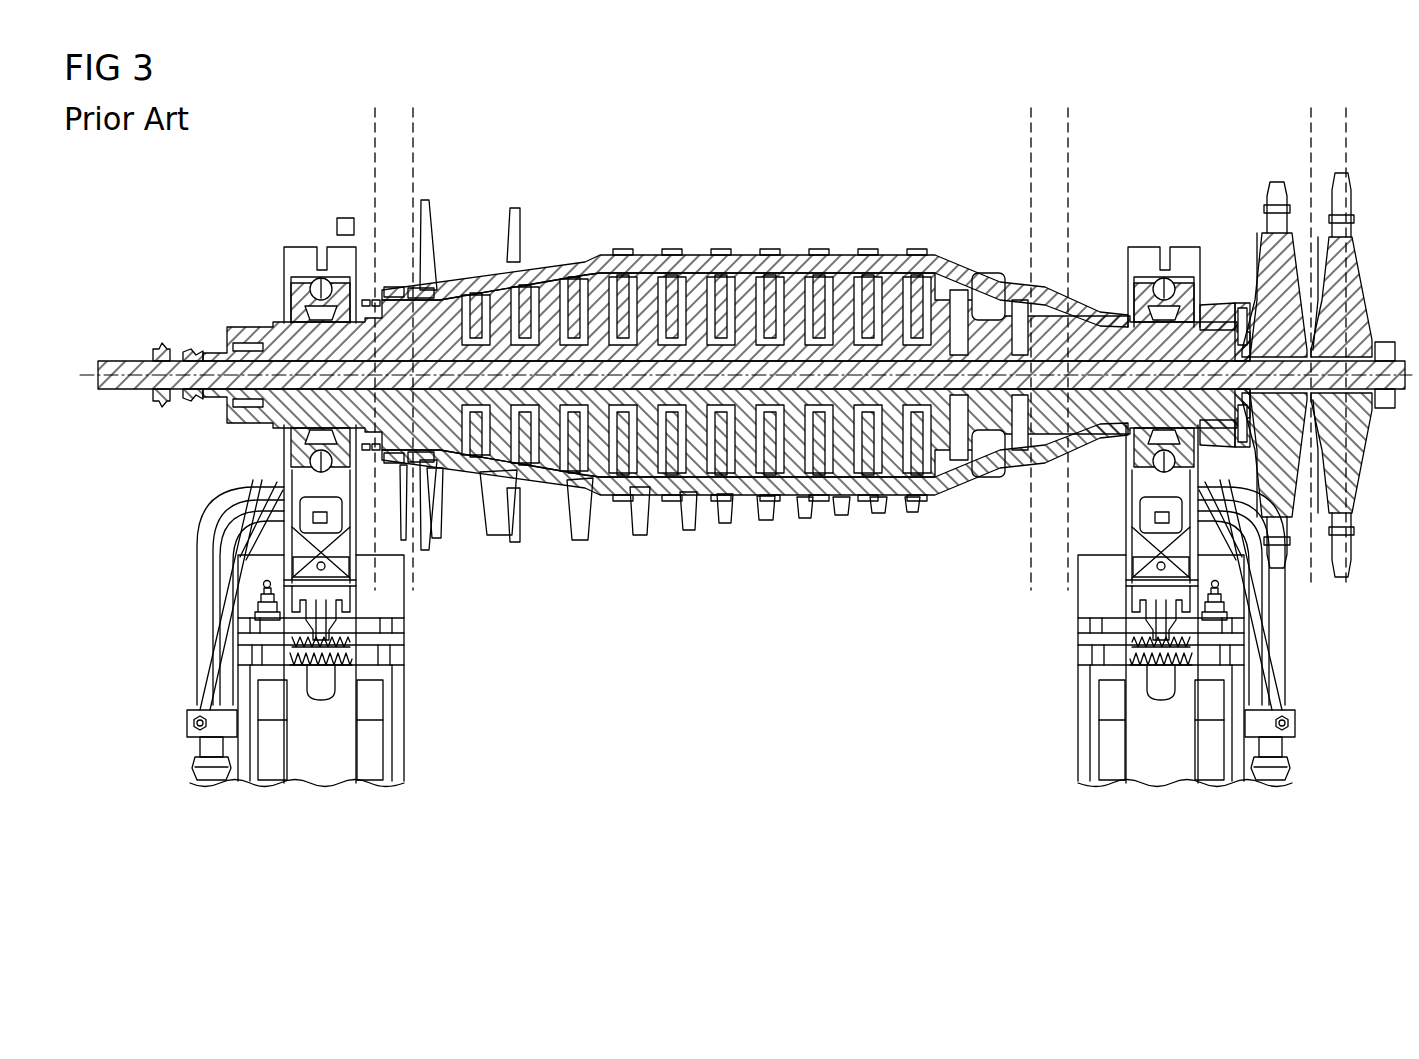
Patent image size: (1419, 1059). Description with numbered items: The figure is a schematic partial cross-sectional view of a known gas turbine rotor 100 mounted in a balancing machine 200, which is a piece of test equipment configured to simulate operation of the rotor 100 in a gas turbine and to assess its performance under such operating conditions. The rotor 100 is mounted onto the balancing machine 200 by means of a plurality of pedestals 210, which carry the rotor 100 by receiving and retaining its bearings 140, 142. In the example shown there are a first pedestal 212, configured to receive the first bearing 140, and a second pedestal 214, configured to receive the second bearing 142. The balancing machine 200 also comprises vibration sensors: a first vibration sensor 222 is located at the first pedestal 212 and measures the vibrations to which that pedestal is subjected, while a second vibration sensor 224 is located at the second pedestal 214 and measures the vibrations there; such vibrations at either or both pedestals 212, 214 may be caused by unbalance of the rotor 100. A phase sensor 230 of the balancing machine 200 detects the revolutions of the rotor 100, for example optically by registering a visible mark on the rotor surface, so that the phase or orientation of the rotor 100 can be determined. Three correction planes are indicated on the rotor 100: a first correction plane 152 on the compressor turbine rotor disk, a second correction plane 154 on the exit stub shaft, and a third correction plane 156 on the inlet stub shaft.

The rotor 100 is at (733, 173).
The first bearing 140 is at (288, 320).
The second bearing 142 is at (1175, 325).
The first correction plane 152 is at (1333, 324).
The second correction plane 154 is at (1050, 326).
The third correction plane 156 is at (396, 326).
The balancing machine 200 is at (158, 662).
The pedestals 210 is at (405, 692).
The first pedestal 212 is at (311, 249).
The second pedestal 214 is at (1166, 238).
The first vibration sensor 222 is at (330, 517).
The second vibration sensor 224 is at (1152, 517).
The phase sensor 230 is at (345, 218).